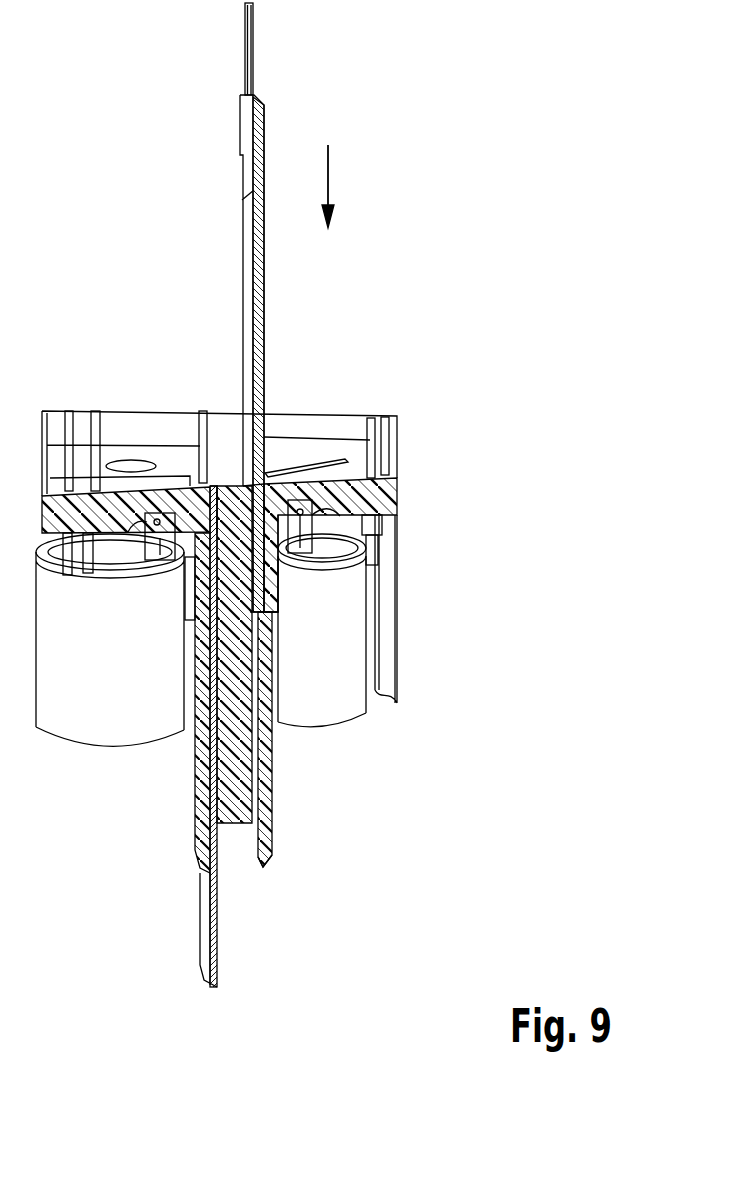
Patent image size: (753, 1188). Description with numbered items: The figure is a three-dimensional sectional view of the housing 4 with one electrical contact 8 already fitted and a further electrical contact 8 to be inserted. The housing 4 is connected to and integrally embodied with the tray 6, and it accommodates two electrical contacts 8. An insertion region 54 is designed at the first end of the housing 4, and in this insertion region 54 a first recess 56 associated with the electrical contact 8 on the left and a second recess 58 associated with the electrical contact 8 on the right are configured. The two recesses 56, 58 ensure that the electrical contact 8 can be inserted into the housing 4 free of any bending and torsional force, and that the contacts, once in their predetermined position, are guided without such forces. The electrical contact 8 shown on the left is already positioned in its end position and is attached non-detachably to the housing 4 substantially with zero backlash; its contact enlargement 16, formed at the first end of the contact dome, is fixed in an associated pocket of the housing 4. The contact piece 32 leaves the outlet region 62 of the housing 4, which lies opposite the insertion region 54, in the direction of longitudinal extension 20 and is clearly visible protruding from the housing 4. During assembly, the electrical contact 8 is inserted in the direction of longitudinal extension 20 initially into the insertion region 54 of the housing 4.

The housing 4 is at (263, 740).
The tray 6 is at (383, 493).
The electrical contact 8 is at (226, 84).
The contact enlargement 16 is at (238, 134).
The direction of longitudinal extension 20 is at (328, 178).
The contact piece 32 is at (207, 928).
The insertion region 54 is at (277, 472).
The first recess 56 is at (247, 507).
The second recess 58 is at (275, 478).
The outlet region 62 is at (267, 872).